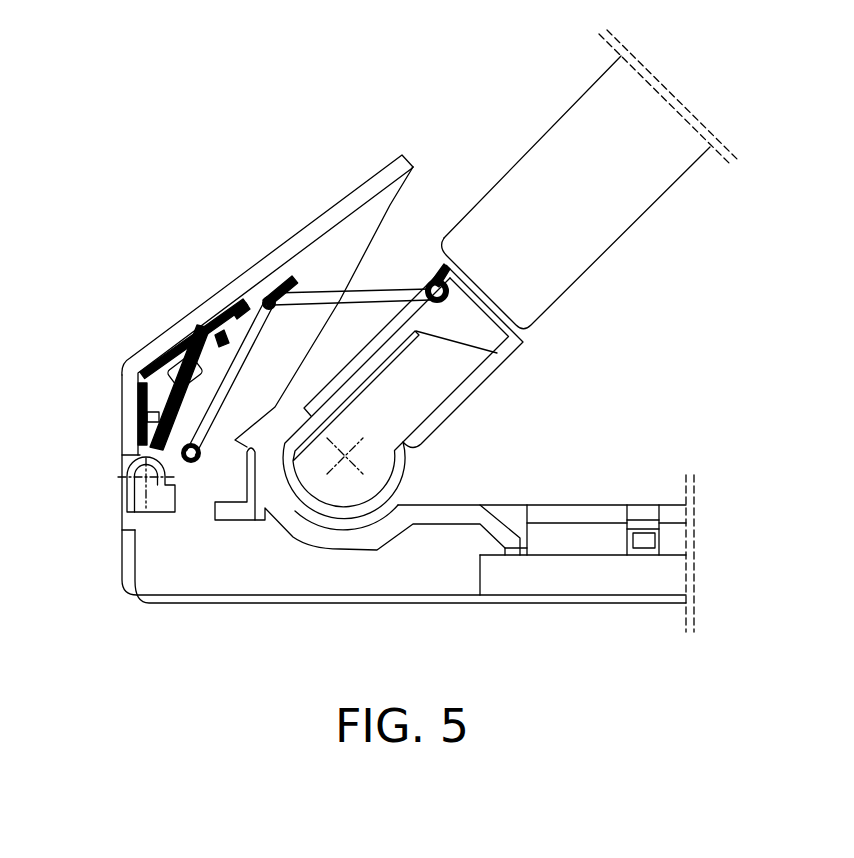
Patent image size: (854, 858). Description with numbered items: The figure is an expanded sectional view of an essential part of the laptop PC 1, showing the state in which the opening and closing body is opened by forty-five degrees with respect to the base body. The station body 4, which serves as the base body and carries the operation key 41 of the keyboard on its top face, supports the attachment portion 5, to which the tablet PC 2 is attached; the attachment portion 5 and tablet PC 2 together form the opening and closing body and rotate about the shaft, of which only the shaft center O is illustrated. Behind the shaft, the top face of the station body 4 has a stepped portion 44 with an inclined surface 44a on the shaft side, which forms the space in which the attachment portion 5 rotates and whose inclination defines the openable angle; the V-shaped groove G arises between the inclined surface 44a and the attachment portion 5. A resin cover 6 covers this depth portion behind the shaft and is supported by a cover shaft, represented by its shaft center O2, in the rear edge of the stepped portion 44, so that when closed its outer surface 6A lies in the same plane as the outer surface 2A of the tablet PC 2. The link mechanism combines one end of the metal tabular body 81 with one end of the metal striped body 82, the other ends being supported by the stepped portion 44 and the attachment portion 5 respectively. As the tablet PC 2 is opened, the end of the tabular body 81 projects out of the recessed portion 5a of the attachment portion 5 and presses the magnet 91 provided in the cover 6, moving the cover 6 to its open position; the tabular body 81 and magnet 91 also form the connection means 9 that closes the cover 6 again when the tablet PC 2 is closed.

The laptop PC 1 is at (619, 398).
The tablet PC 2 is at (653, 192).
The outer surface of the tablet PC 2A is at (523, 156).
The station body 4 is at (368, 605).
The operation key 41 is at (584, 516).
The stepped portion 44 is at (193, 490).
The inclined surface 44a is at (257, 521).
The attachment portion 5 is at (450, 370).
The recessed portion 5a is at (497, 353).
The cover 6 is at (307, 236).
The outer surface of the cover 6A is at (353, 193).
The tabular body 81 is at (180, 350).
The striped body 82 is at (400, 296).
The connection means 9 is at (272, 275).
The magnet 91 is at (243, 303).
The V-shaped groove G is at (274, 465).
The shaft center O is at (357, 457).
The shaft center of the cover shaft O2 is at (120, 497).